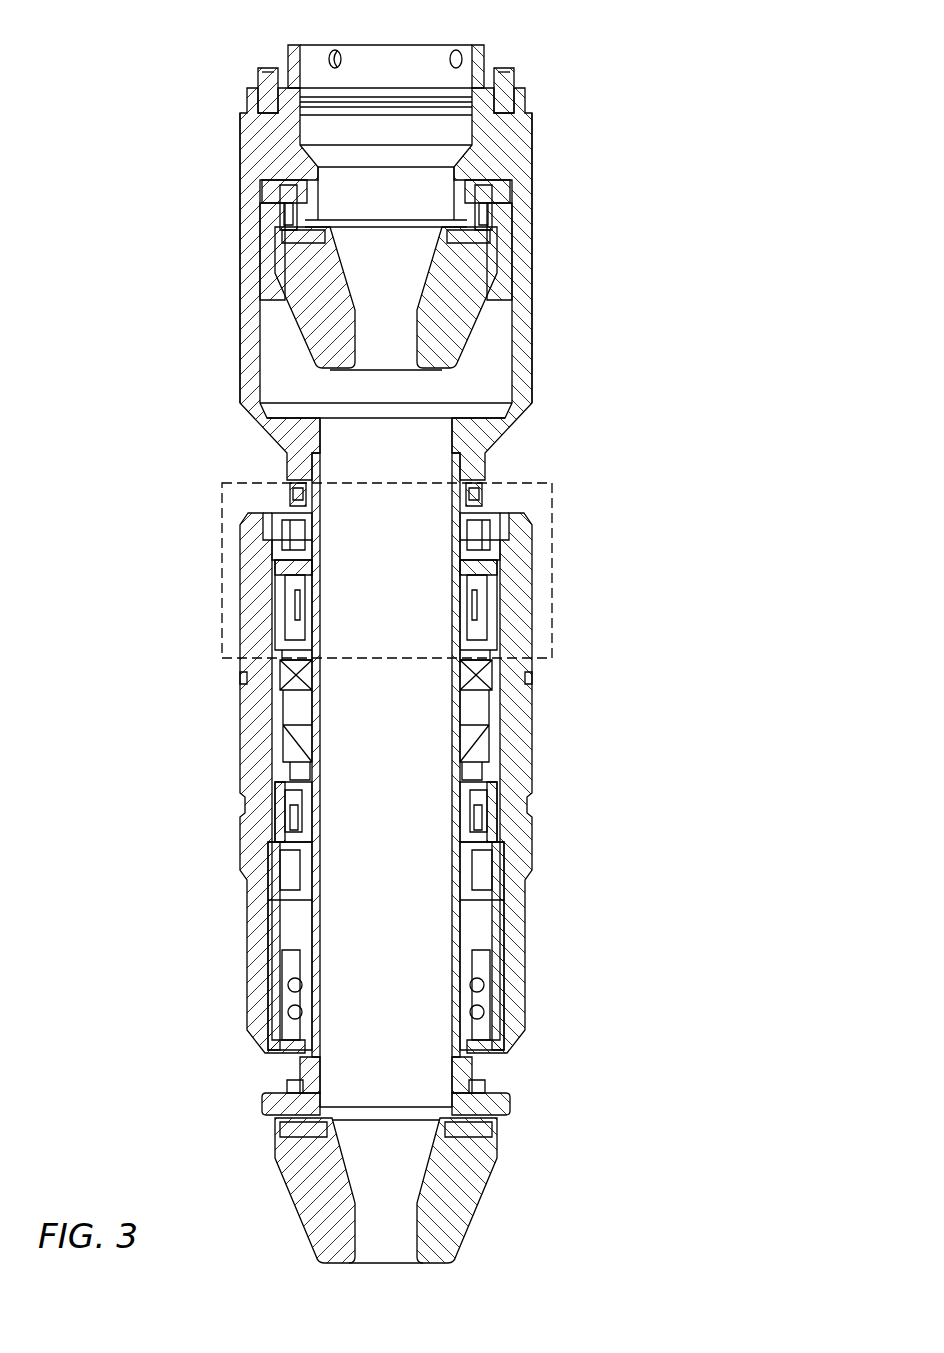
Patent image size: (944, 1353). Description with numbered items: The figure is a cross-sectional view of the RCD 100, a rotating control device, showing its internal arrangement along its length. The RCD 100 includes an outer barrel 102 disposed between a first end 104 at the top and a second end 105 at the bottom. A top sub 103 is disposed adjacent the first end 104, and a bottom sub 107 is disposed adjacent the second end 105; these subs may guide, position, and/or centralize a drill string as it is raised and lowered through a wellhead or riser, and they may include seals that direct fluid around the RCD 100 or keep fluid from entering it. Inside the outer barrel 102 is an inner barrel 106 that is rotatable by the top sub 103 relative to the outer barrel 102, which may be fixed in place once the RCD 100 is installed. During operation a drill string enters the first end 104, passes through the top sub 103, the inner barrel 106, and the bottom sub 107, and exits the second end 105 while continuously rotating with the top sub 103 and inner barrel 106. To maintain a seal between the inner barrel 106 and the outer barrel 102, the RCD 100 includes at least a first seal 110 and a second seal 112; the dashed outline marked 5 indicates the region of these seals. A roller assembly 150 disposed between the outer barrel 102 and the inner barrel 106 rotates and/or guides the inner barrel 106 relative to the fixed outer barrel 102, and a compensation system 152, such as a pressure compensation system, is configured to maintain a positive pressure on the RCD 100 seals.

The RCD 100 is at (690, 78).
The outer barrel 102 is at (531, 744).
The top sub 103 is at (533, 189).
The first end 104 is at (478, 46).
The second end 105 is at (440, 1263).
The inner barrel 106 is at (285, 690).
The bottom sub 107 is at (504, 1103).
The first seal 110 is at (480, 543).
The second seal 112 is at (487, 493).
The roller assembly 150 is at (492, 808).
The compensation system 152 is at (521, 912).
The detail region of FIG. 5 is at (222, 558).